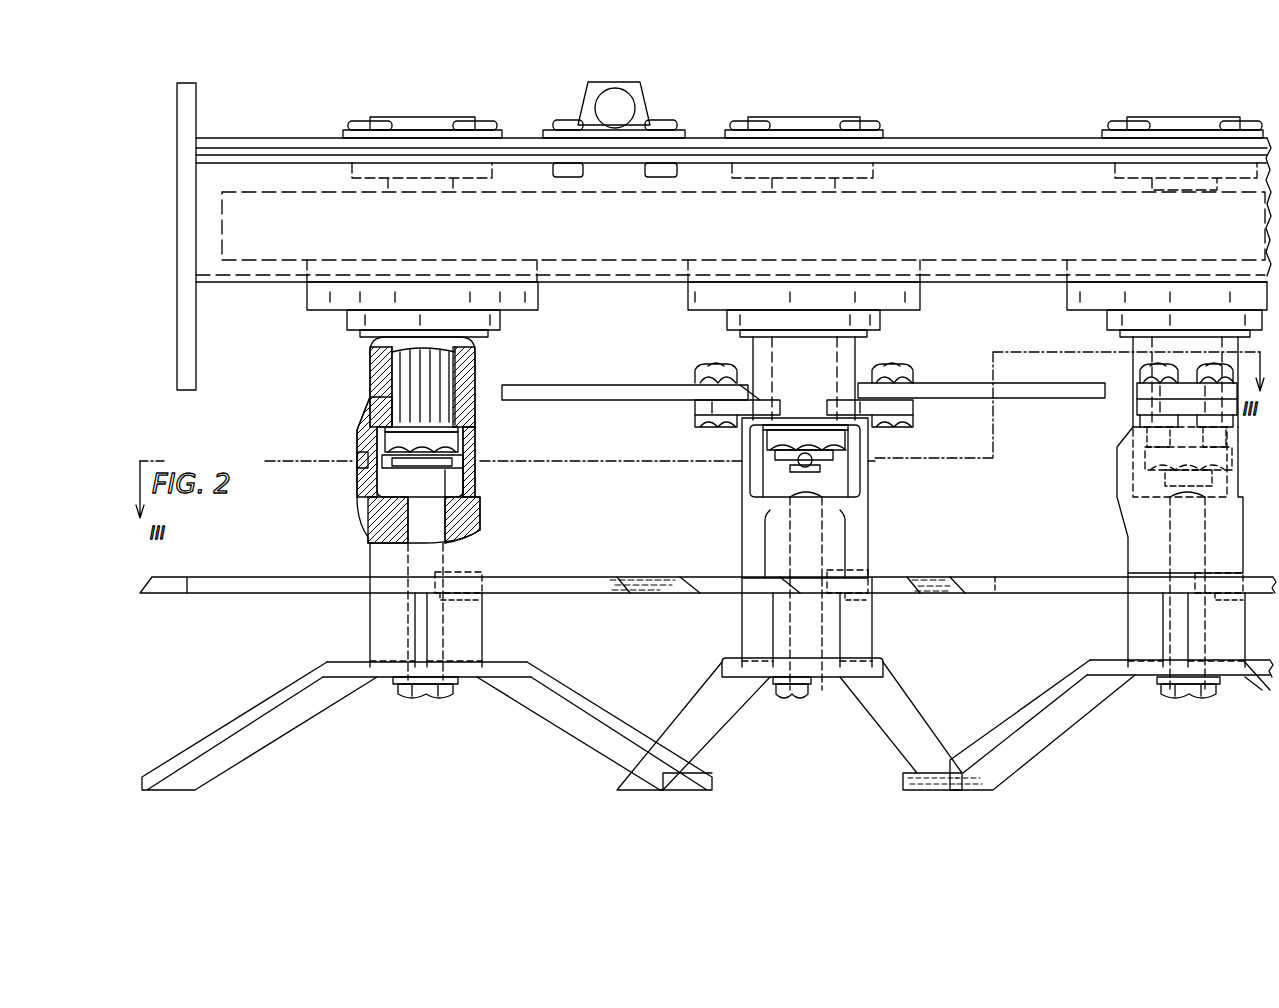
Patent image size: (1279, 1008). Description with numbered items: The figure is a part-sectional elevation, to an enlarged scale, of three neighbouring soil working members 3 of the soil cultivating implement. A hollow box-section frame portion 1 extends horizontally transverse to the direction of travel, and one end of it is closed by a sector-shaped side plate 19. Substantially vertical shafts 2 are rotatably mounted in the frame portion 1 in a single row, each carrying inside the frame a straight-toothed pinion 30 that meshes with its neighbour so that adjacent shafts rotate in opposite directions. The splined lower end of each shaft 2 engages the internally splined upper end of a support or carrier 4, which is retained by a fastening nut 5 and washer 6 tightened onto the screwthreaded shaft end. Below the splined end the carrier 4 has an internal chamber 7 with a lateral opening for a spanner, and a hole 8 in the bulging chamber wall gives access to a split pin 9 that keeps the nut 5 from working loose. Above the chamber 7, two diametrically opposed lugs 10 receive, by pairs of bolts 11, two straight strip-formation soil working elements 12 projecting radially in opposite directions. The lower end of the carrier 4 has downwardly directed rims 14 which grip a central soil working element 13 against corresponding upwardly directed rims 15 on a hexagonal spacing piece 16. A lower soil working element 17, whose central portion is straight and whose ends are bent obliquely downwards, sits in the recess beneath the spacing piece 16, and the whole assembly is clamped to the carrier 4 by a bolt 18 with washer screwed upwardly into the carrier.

The hollow box-section frame portion 1 is at (598, 282).
The shaft 2 is at (464, 373).
The soil working member 3 is at (348, 433).
The support or carrier 4 is at (368, 412).
The fastening nut 5 is at (458, 446).
The washer 6 is at (462, 430).
The internal chamber 7 is at (450, 484).
The hole 8 is at (360, 463).
The split pin 9 is at (388, 470).
The lug 10 is at (695, 406).
The bolt 11 is at (710, 364).
The soil working element 12 is at (378, 388).
The soil working element 13 is at (242, 593).
The downwardly directed rim 14 is at (480, 576).
The upwardly directed rim 15 is at (483, 598).
The spacing piece 16 is at (372, 628).
The lower soil working element 17 is at (247, 720).
The bolt 18 is at (422, 698).
The side plate 19 is at (196, 357).
The pinion 30 is at (1022, 188).